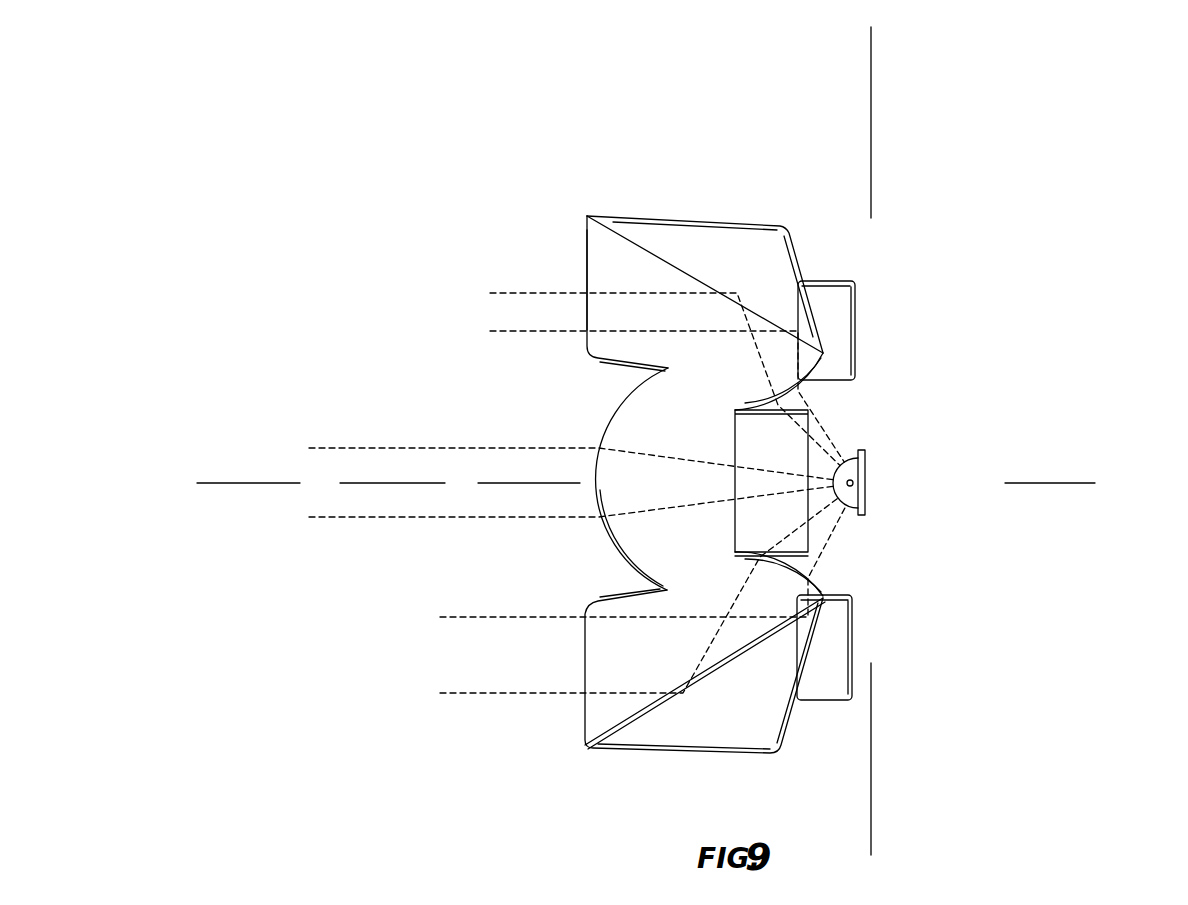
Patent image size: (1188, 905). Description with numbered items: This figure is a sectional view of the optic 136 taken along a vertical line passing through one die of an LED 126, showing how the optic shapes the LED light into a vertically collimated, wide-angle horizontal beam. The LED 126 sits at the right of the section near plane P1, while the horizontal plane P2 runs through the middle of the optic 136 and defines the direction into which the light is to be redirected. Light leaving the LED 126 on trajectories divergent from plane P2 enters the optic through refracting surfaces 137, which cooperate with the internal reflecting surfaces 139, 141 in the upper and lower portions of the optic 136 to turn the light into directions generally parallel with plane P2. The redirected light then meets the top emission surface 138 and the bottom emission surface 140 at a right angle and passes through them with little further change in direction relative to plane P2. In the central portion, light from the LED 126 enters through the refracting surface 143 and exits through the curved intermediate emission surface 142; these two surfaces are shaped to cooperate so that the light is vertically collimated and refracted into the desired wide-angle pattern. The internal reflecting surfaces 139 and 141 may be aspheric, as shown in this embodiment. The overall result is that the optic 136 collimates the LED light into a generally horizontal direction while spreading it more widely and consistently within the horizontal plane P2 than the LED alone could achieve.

The LED of the first plurality of LEDs 126 is at (863, 474).
The optic 136 is at (651, 214).
The refracting surface 137 is at (805, 380).
The top emission surface 138 is at (588, 293).
The internal reflecting surface 139 is at (696, 268).
The bottom emission surface 140 is at (585, 667).
The internal reflecting surface 141 is at (662, 707).
The intermediate emission surface 142 is at (617, 417).
The refracting surface 143 is at (735, 442).
The plane P1 is at (871, 198).
The horizontal plane P2 is at (1145, 437).